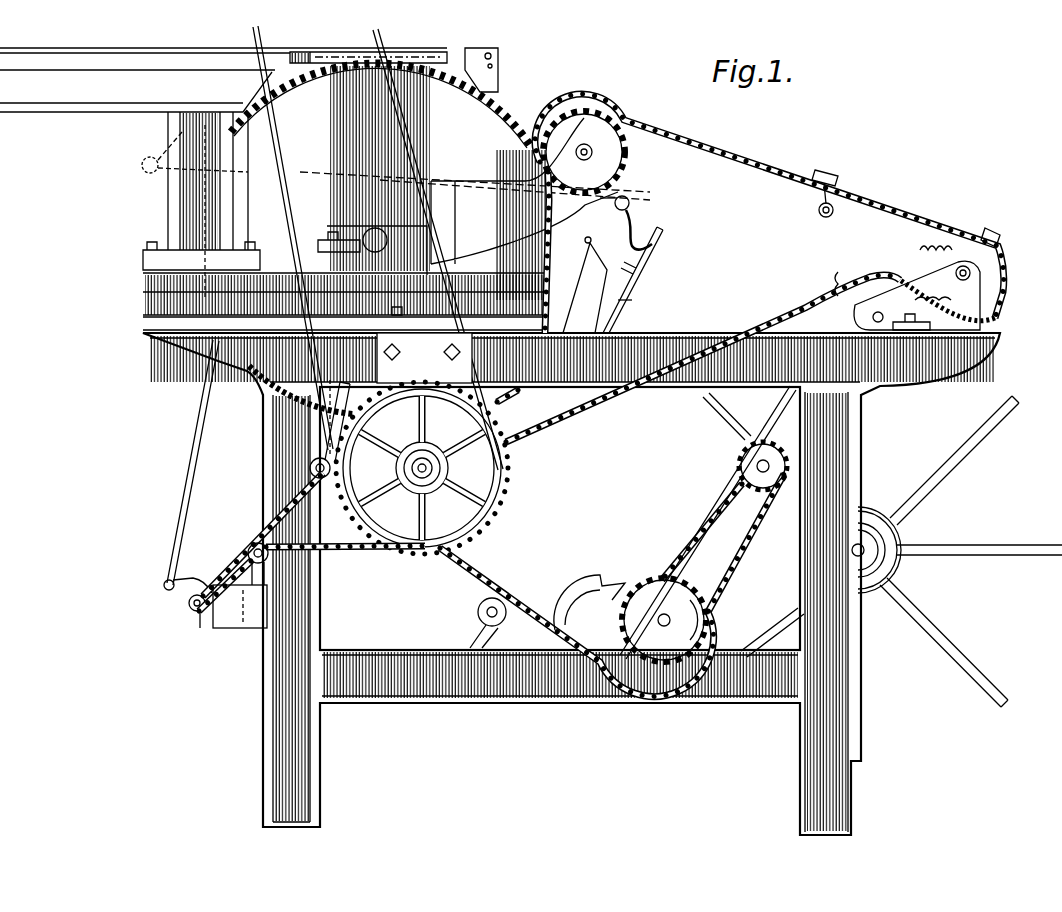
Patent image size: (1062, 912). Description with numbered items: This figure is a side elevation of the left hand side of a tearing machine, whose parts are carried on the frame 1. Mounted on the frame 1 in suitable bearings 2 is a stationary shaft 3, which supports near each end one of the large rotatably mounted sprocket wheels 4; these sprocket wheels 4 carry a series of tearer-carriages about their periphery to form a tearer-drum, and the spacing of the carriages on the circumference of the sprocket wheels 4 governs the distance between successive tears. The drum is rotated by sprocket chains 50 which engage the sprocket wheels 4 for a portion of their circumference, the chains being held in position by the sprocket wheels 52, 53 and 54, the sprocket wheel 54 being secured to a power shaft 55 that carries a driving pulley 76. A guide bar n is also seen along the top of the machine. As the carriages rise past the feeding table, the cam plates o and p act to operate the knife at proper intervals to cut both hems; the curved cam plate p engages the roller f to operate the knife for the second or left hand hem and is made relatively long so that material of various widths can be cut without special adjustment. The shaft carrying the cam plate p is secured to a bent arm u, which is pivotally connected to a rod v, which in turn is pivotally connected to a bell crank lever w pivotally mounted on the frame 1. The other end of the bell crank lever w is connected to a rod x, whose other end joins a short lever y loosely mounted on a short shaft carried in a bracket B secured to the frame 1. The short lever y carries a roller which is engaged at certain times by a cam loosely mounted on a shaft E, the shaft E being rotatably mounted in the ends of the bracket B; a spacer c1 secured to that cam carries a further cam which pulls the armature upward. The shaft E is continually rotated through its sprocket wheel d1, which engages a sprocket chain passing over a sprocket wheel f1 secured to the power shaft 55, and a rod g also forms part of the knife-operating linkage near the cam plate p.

The frame 1 is at (280, 432).
The guide bar n is at (434, 52).
The bell crank lever w is at (150, 158).
The bearings 2 is at (336, 240).
The stationary shaft 3 is at (380, 246).
The rod v is at (322, 180).
The sprocket wheels 4 is at (497, 142).
The cam plate o is at (490, 84).
The sprocket wheel 53 is at (618, 166).
The sprocket chains 50 is at (755, 166).
The sprocket wheel 52 is at (990, 282).
The bent arm u is at (633, 232).
The rod g is at (645, 250).
The roller f is at (628, 300).
The curved cam plate p is at (572, 305).
The sprocket wheel f1 is at (386, 398).
The sprocket wheel 54 is at (478, 520).
The power shaft 55 is at (500, 482).
The driving pulley 76 is at (440, 546).
The rod x is at (193, 423).
The short lever y is at (202, 574).
The sprocket wheel d1 is at (190, 606).
The spacer c1 is at (262, 532).
The bracket B is at (236, 630).
The shaft E is at (200, 630).